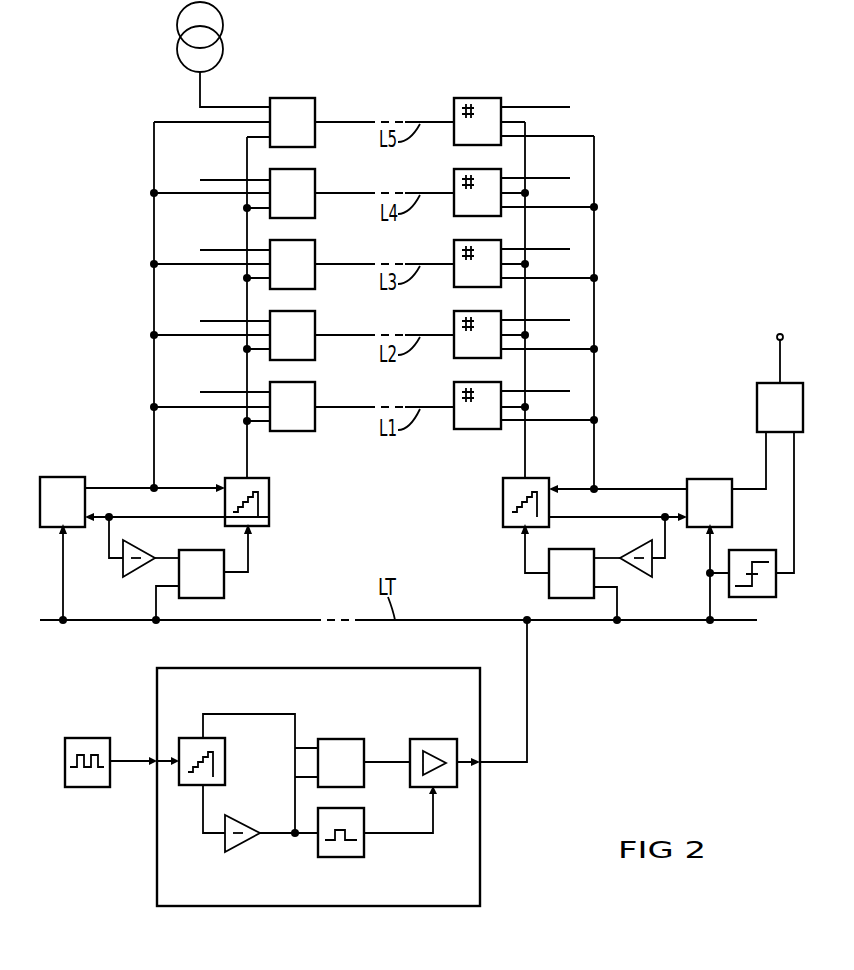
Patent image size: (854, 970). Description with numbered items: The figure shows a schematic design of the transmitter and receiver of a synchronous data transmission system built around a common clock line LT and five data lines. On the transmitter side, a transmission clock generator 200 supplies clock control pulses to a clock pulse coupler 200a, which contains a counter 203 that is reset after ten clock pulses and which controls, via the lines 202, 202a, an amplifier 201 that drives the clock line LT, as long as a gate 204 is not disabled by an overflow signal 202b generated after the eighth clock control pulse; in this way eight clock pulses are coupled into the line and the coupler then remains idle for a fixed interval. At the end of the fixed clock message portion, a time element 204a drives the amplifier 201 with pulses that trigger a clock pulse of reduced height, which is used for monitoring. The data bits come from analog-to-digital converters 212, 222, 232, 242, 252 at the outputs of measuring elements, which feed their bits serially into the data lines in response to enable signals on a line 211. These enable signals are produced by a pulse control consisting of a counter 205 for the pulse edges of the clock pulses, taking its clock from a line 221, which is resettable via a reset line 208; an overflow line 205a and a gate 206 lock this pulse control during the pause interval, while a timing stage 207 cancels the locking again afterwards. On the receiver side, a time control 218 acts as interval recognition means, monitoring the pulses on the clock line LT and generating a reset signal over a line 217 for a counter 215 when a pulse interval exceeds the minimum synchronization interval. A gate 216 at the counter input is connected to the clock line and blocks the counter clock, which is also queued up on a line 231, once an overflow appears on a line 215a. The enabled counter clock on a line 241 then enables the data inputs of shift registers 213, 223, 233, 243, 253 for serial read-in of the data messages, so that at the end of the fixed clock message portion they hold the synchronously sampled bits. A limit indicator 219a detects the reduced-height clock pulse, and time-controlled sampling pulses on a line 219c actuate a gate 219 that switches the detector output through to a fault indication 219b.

The transmission clock generator 200 is at (87, 787).
The clock pulse coupler 200a is at (480, 878).
The amplifier 201 is at (437, 739).
The line 202 is at (383, 762).
The line 202a is at (225, 714).
The overflow signal 202b is at (262, 835).
The counter 203 is at (225, 762).
The gate 204 is at (353, 739).
The time element 204a is at (355, 857).
The counter 205 is at (269, 500).
The overflow line 205a is at (160, 517).
The gate 206 is at (224, 585).
The timing stage 207 is at (70, 477).
The reset line 208 is at (192, 488).
The line 211 is at (248, 459).
The analog-to-digital converter 212 is at (315, 384).
The shift register 213 is at (454, 385).
The counter 215 is at (503, 500).
The overflow line 215a is at (590, 517).
The gate 216 is at (549, 585).
The connection line 217 is at (648, 489).
The time control 218 is at (705, 479).
The gate 219 is at (757, 405).
The limit indicator 219a is at (755, 550).
The fault indication 219b is at (777, 337).
The line 219c is at (766, 480).
The clock line 221 is at (154, 447).
The analog-to-digital converter 222 is at (315, 313).
The shift register 223 is at (454, 314).
The line 231 is at (525, 453).
The analog-to-digital converter 232 is at (315, 242).
The shift register 233 is at (454, 243).
The line 241 is at (594, 453).
The analog-to-digital converter 242 is at (315, 171).
The shift register 243 is at (454, 172).
The analog-to-digital converter 252 is at (315, 100).
The shift register 253 is at (454, 101).